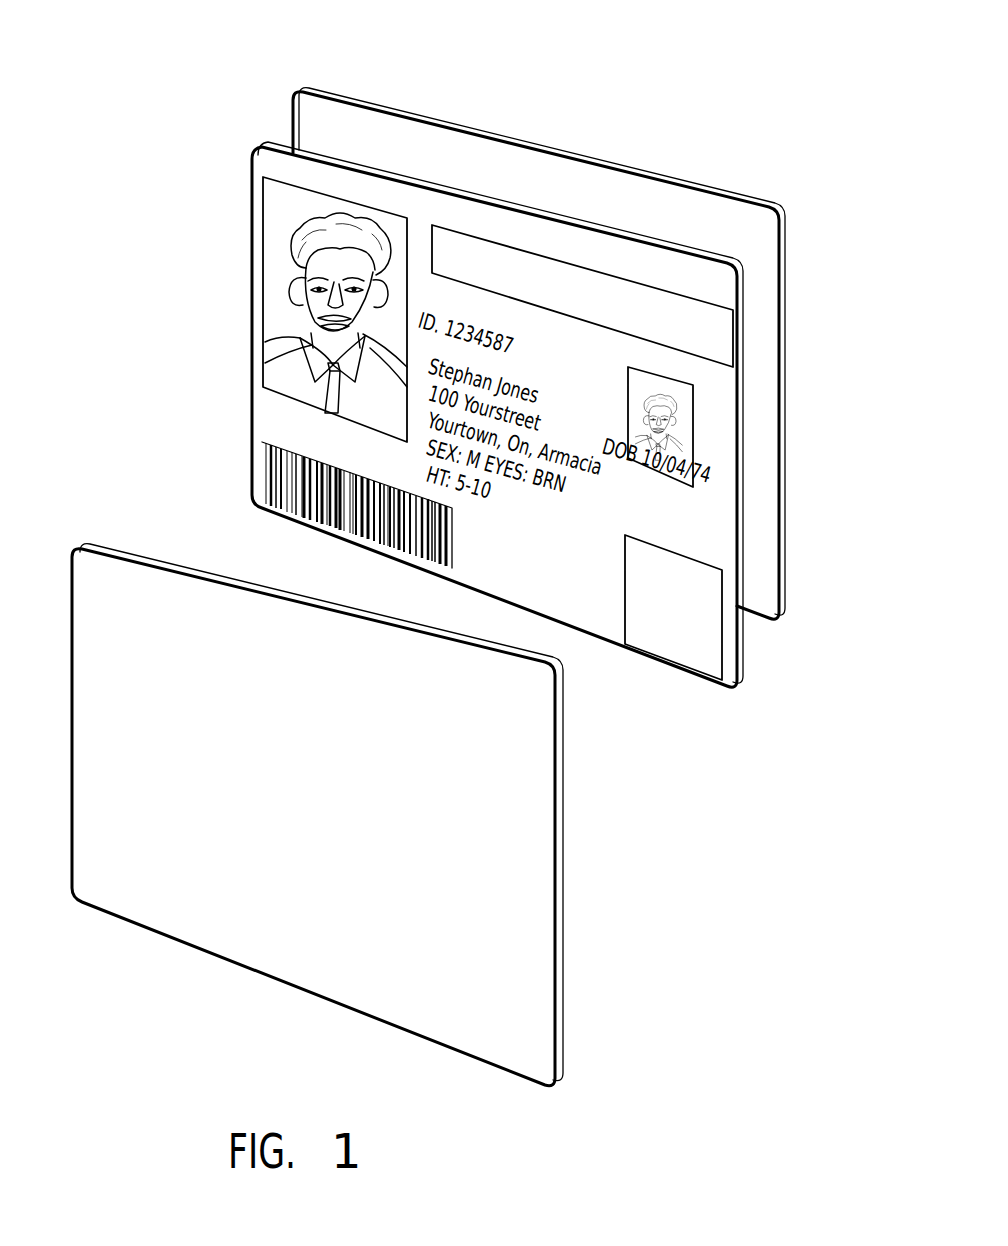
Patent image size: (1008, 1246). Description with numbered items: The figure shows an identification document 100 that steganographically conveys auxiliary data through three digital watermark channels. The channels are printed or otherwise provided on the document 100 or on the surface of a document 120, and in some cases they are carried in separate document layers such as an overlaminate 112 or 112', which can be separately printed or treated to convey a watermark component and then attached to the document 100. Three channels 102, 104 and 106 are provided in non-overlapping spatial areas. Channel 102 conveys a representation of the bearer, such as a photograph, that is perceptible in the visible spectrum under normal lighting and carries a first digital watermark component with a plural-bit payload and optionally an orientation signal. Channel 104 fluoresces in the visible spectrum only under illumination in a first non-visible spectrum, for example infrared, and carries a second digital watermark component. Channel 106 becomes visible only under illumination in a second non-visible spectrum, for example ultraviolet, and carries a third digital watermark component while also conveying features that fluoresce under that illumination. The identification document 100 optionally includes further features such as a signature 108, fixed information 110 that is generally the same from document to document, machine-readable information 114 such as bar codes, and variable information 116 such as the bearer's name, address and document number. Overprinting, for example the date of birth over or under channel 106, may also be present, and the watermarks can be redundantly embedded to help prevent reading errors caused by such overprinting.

The identification document 100 is at (168, 285).
The channel 102 is at (278, 377).
The channel 104 is at (690, 647).
The channel 106 is at (700, 448).
The signature 108 is at (713, 342).
The fixed information 110 is at (270, 418).
The overlaminate 112 is at (396, 819).
The overlaminate 112' is at (539, 345).
The machine-readable information 114 is at (273, 492).
The variable information 116 is at (597, 492).
The document 120 is at (250, 160).